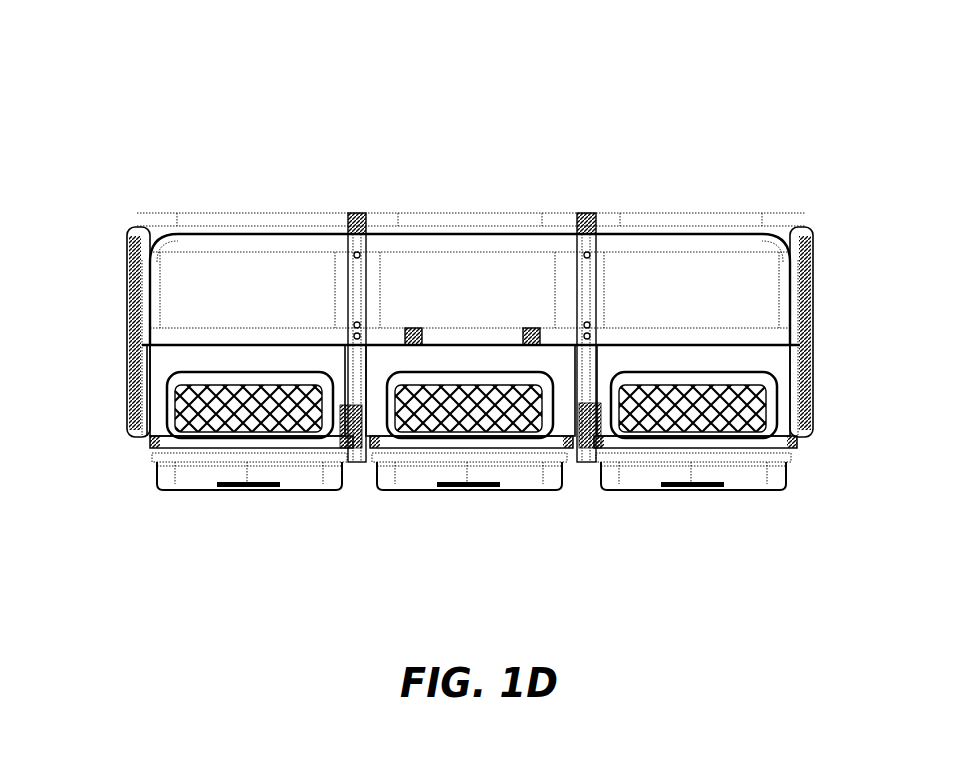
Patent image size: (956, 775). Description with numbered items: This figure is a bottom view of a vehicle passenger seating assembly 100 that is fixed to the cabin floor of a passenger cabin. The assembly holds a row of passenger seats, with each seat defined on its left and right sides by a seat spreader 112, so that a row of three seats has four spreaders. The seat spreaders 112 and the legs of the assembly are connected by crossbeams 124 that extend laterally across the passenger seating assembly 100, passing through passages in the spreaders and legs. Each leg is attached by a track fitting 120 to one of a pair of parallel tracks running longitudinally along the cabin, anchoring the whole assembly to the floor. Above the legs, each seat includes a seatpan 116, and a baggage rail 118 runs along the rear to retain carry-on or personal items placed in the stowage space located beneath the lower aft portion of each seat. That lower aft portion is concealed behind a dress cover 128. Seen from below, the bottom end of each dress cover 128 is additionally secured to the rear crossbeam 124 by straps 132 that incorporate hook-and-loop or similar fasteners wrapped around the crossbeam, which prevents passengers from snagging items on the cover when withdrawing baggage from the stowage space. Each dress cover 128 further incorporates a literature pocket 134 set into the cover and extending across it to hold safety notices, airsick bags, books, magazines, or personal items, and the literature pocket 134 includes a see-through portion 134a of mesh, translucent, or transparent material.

The passenger seating assembly 100 is at (120, 88).
The seat spreader 112 is at (137, 414).
The seatpan 116 is at (549, 220).
The baggage rail 118 is at (788, 236).
The track fitting 120 is at (351, 216).
The crossbeam 124 is at (685, 335).
The dress cover 128 is at (297, 360).
The strap 132 is at (532, 328).
The literature pocket 134 is at (396, 418).
The see-through portion 134a is at (518, 415).